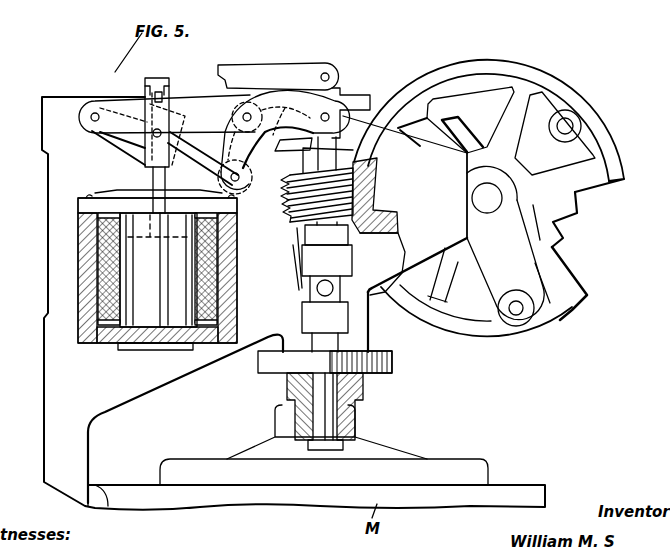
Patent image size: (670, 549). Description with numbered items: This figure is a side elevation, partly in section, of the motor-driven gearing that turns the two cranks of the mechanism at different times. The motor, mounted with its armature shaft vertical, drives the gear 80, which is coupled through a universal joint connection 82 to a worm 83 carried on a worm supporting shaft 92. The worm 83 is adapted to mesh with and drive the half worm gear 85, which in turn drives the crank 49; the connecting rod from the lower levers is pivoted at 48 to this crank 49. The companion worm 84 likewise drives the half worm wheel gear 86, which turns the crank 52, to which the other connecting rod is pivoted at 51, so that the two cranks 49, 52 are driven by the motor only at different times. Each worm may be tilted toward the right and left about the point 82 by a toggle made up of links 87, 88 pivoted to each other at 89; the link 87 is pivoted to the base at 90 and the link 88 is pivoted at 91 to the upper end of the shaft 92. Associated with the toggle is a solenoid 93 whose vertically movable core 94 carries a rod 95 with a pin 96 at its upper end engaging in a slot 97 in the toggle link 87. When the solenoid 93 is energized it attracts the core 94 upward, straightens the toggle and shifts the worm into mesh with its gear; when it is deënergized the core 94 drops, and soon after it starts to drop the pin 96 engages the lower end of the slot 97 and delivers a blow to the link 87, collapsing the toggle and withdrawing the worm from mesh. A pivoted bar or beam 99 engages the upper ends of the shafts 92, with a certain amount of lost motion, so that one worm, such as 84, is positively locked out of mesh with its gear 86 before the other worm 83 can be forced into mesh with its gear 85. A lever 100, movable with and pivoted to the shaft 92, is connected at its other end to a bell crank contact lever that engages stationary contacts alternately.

The pivot 48 is at (520, 310).
The crank 49 is at (492, 268).
The pivot 51 is at (564, 126).
The crank 52 is at (563, 153).
The gear 80 is at (394, 358).
The universal joint connection 82 is at (328, 288).
The worm 83 is at (382, 292).
The worm 84 is at (287, 212).
The half worm gear 85 is at (393, 190).
The half worm wheel gear 86 is at (565, 278).
The toggle link 87 is at (193, 108).
The toggle link 88 is at (307, 92).
The pivot 89 is at (248, 113).
The pivot 90 is at (95, 115).
The pivot 91 is at (328, 117).
The worm supporting shaft 92 is at (293, 162).
The solenoid 93 is at (105, 250).
The core 94 is at (127, 315).
The rod 95 is at (160, 177).
The pin 96 is at (158, 92).
The slot 97 is at (154, 97).
The bar or beam 99 is at (368, 100).
The lever 100 is at (288, 63).